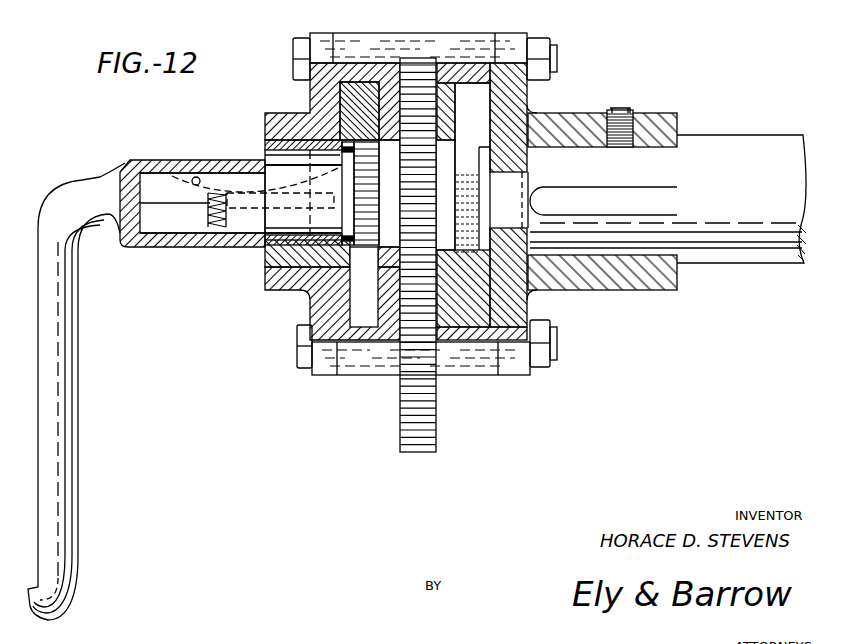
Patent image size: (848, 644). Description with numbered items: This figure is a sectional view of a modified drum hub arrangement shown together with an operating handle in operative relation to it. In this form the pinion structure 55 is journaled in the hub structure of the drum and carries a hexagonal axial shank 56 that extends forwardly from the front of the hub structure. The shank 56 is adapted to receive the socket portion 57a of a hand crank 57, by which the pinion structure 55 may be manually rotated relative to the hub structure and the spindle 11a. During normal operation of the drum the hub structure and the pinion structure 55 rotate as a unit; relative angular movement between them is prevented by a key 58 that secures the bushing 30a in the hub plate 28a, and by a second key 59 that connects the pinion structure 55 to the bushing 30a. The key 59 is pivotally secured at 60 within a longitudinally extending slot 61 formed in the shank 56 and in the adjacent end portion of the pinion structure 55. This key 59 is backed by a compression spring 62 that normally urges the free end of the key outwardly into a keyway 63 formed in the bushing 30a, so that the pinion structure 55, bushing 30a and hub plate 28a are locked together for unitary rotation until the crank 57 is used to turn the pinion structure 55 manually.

The spindle 11a is at (660, 244).
The hub plate 28a is at (317, 94).
The bushing 30a is at (316, 300).
The pinion structure 55 is at (388, 250).
The hexagonal axial shank 56 is at (162, 222).
The hand crank 57 is at (63, 437).
The socket portion 57a is at (138, 160).
The key 58 is at (270, 254).
The key 59 is at (231, 181).
The pivot 60 is at (195, 179).
The longitudinally extending slot 61 is at (248, 200).
The compression spring 62 is at (210, 238).
The keyway 63 is at (284, 158).